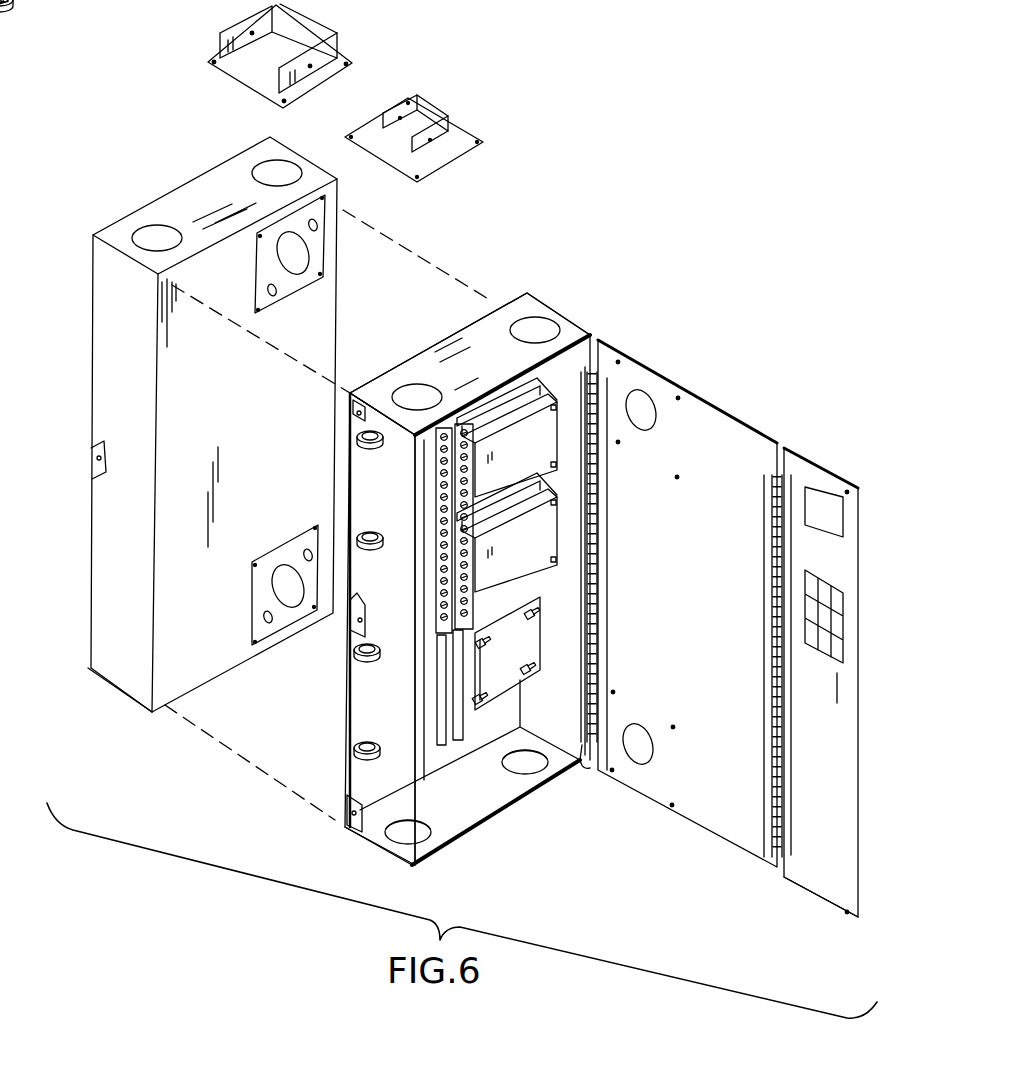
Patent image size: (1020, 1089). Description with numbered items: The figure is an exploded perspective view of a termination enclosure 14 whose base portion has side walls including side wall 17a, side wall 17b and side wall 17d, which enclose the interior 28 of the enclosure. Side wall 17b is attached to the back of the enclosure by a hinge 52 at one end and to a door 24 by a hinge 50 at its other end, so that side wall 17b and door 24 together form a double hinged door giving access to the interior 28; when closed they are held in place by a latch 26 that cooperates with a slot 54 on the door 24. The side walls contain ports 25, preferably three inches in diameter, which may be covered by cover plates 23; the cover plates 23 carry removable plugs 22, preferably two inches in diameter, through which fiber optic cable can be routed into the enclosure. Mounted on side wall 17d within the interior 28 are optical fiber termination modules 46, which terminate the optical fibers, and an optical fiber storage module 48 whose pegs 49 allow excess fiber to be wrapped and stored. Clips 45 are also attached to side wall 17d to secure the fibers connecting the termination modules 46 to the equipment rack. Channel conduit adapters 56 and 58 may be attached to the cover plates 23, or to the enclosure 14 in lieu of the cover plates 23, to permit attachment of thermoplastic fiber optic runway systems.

The termination enclosure 14 is at (320, 173).
The side wall 17a is at (502, 373).
The side wall 17b is at (708, 567).
The side wall 17d is at (420, 588).
The plugs 22 is at (307, 253).
The cover plates 23 is at (328, 217).
The door 24 is at (148, 652).
The ports 25 is at (152, 237).
The latch 26 is at (93, 478).
The interior 28 is at (412, 640).
The clips 45 is at (372, 445).
The optical fiber termination modules 46 is at (527, 485).
The optical fiber storage module 48 is at (510, 684).
The pegs 49 is at (489, 645).
The hinge 50 is at (763, 858).
The hinge 52 is at (582, 772).
The slot 54 is at (841, 688).
The channel conduit adapter 56 is at (350, 65).
The channel conduit adapter 58 is at (450, 120).